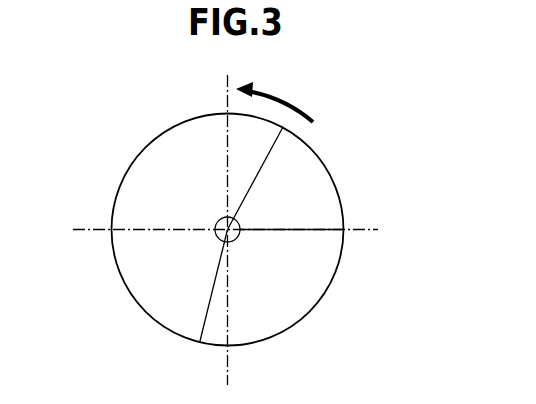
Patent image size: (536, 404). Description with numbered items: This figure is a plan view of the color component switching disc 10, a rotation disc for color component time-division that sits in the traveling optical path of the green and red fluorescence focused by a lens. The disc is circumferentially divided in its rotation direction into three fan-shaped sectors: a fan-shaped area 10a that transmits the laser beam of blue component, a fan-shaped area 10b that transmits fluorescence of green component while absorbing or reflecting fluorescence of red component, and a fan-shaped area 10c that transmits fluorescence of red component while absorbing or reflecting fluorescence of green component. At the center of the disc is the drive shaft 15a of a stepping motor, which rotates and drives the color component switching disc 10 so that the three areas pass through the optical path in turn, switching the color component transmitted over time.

The color component switching disc 10 is at (159, 122).
The fan-shaped area 10a is at (290, 158).
The fan-shaped area 10b is at (155, 168).
The fan-shaped area 10c is at (313, 262).
The drive shaft 15a is at (217, 238).